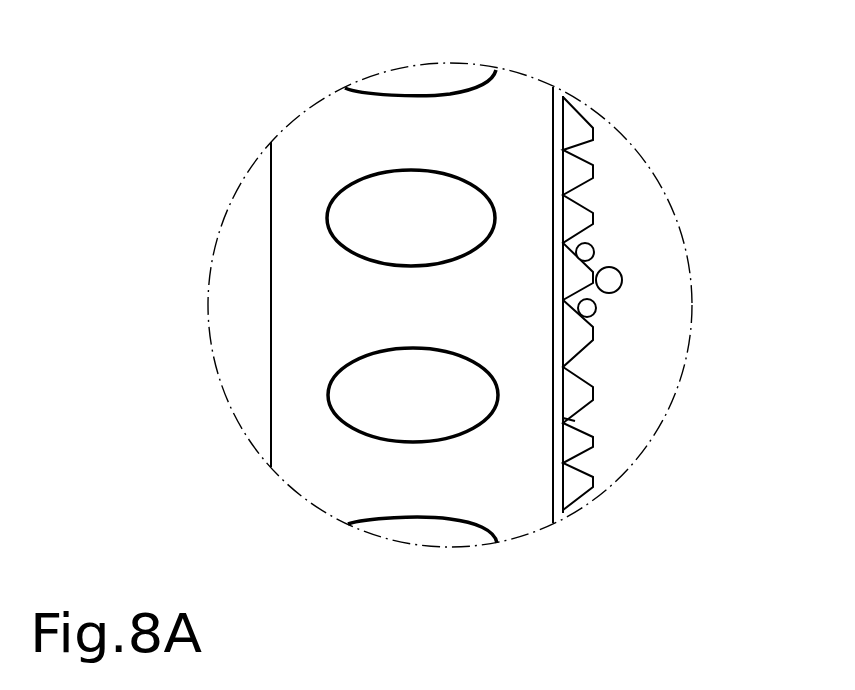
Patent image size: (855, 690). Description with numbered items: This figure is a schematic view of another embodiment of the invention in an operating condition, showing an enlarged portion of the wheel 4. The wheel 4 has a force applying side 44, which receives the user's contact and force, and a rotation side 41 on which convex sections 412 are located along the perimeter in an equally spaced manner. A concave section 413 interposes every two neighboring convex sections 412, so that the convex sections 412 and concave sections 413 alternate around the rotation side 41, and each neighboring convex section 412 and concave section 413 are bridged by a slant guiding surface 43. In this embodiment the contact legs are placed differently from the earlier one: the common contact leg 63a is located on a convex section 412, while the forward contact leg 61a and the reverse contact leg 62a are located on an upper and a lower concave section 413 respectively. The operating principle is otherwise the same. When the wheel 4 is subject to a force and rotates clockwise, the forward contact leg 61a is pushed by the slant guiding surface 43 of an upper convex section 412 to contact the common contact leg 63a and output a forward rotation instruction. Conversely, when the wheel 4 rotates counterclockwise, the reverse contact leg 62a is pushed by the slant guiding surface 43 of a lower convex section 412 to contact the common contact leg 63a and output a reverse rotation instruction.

The wheel 4 is at (258, 232).
The rotation side 41 is at (558, 117).
The convex sections 412 is at (593, 222).
The concave sections 413 is at (573, 370).
The slant guiding surface 43 is at (573, 418).
The force applying side 44 is at (358, 223).
The forward contact leg 61a is at (594, 312).
The reverse contact leg 62a is at (594, 252).
The common contact leg 63a is at (605, 280).